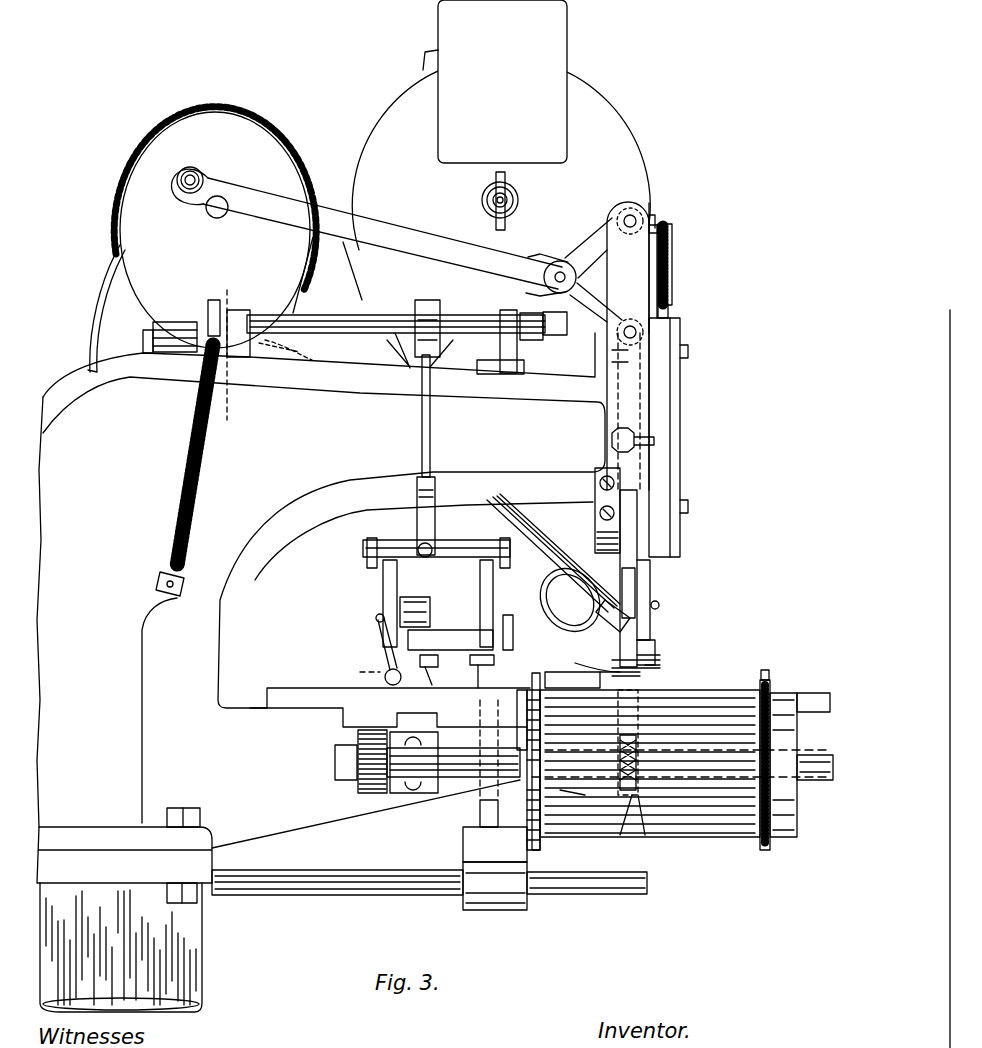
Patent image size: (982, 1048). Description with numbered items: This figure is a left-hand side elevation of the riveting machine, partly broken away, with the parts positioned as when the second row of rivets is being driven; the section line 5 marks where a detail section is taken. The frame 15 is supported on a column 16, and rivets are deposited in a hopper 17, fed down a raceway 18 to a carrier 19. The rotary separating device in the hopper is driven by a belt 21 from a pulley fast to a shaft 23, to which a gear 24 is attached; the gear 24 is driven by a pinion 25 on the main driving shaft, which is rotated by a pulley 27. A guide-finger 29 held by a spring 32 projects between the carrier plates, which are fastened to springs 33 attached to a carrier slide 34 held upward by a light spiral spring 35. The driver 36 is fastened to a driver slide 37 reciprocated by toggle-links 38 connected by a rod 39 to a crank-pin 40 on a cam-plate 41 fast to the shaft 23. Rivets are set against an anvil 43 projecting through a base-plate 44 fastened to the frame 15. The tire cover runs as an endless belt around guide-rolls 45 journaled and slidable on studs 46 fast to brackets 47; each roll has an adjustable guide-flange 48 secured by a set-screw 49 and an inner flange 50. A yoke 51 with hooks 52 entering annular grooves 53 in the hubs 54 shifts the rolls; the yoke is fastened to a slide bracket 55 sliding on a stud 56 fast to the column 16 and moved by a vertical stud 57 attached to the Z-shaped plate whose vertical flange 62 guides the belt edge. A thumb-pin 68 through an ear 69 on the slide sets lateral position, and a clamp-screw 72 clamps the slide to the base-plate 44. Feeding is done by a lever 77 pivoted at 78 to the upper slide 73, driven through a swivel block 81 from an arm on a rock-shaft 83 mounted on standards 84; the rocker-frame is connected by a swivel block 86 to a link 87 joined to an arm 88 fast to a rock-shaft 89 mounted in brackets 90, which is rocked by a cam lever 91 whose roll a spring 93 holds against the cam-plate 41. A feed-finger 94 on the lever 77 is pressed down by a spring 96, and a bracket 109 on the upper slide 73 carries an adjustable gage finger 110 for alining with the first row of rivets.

The section line 5— 5 is at (226, 337).
The frame 15 is at (321, 618).
The column 16 is at (192, 965).
The hopper 17 is at (555, 45).
The raceway 18 is at (515, 533).
The carrier 19 is at (665, 670).
The belt 21 is at (370, 220).
The shaft 23 is at (206, 210).
The gear 24 is at (240, 115).
The pinion 25 is at (289, 352).
The pulley 27 is at (90, 350).
The guide-finger 29 is at (665, 660).
The spring 32 is at (660, 630).
The springs 33 is at (652, 594).
The carrier slide 34 is at (660, 574).
The light spiral spring 35 is at (675, 283).
The driver 36 is at (662, 608).
The driver slide 37 is at (655, 385).
The toggle-links 38 is at (598, 248).
The rod 39 is at (437, 245).
The crank-pin 40 is at (200, 176).
The cam-plate 41 is at (197, 213).
The anvil 43 is at (660, 707).
The base-plate 44 is at (290, 692).
The guide-rolls 45 is at (682, 764).
The studs 46 is at (824, 785).
The brackets 47 is at (358, 795).
The guide-flange 48 is at (782, 690).
The set-screw 49 is at (765, 675).
The flange 50 is at (567, 838).
The yoke 51 is at (525, 850).
The hooks 52 is at (521, 768).
The annular grooves 53 is at (508, 720).
The hubs 54 is at (520, 775).
The slide bracket 55 is at (530, 908).
The stud 56 is at (362, 893).
The vertical stud 57 is at (480, 812).
The vertical flange 62 is at (572, 687).
The thumb-pin 68 is at (432, 683).
The ear 69 is at (440, 702).
The clamp-screw 72 is at (360, 672).
The upper slide 73 is at (380, 648).
The lever 77 is at (458, 635).
The pivot 78 is at (512, 622).
The swivel block 81 is at (400, 605).
The rock-shaft 83 is at (453, 562).
The standards 84 is at (383, 588).
The swivel block 86 is at (418, 548).
The link 87 is at (422, 512).
The arm 88 is at (428, 305).
The rock-shaft 89 is at (347, 332).
The brackets 90 is at (242, 342).
The cam lever 91 is at (208, 312).
The spring 93 is at (185, 490).
The feed-finger 94 is at (632, 679).
The spring 96 is at (548, 605).
The bracket 109 is at (476, 686).
The gage finger 110 is at (606, 677).